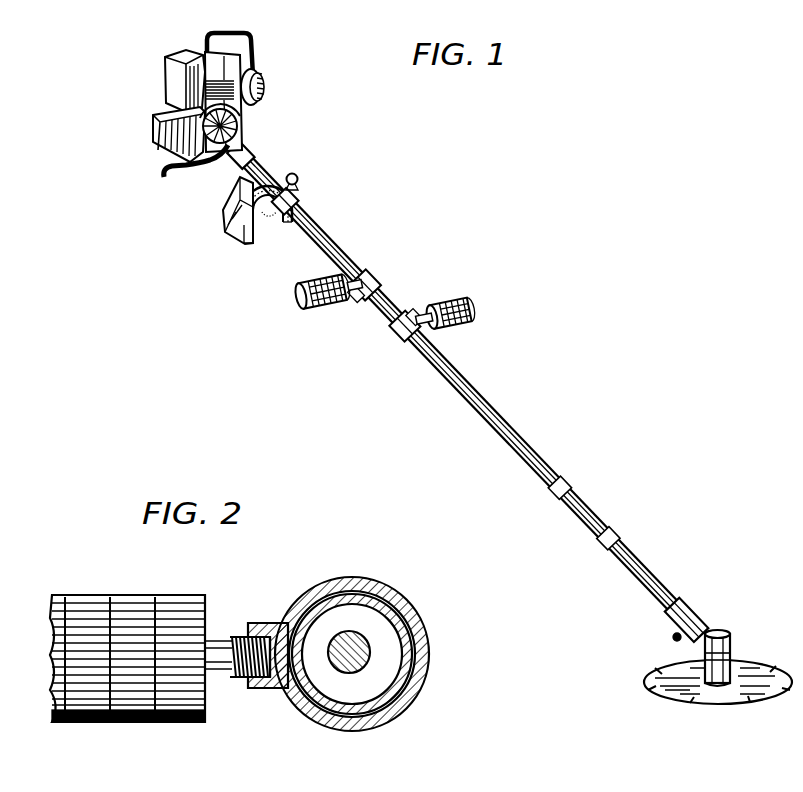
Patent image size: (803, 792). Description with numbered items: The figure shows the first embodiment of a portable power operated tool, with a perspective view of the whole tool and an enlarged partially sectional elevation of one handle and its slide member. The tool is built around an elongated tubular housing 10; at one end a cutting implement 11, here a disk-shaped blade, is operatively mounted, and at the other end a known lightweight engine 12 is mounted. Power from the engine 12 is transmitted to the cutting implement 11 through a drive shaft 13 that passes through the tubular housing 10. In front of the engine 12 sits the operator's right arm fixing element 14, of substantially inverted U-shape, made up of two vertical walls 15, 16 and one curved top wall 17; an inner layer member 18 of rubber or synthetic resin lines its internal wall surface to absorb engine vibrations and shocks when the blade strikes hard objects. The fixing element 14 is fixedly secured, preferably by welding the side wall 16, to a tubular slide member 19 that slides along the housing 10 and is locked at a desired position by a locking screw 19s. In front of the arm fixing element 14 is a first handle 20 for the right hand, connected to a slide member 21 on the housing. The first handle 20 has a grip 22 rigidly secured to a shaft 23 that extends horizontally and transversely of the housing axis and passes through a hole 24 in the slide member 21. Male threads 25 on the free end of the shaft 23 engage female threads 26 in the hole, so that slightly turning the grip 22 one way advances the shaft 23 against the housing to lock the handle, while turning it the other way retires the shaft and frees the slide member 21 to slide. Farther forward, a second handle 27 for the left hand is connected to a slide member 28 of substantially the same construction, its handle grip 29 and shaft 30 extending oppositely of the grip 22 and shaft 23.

In FIG. 1, the elongated tubular housing 10 is at (505, 406).
In FIG. 2, the elongated tubular housing 10 is at (370, 606).
In FIG. 1, the cutting implement 11 is at (706, 700).
In FIG. 1, the engine 12 is at (160, 118).
In FIG. 1, the drive shaft 13 is at (600, 525).
In FIG. 2, the drive shaft 13 is at (358, 674).
In FIG. 1, the arm fixing element 14 is at (228, 226).
In FIG. 1, the vertical wall 15 is at (233, 242).
In FIG. 1, the vertical wall 16 is at (286, 216).
In FIG. 1, the curved top wall 17 is at (236, 190).
In FIG. 1, the inner layer member 18 is at (262, 224).
In FIG. 1, the tubular slide member 19 is at (306, 202).
In FIG. 1, the locking screw 19s is at (298, 178).
In FIG. 1, the first handle 20 is at (298, 296).
In FIG. 1, the slide member 21 is at (372, 276).
In FIG. 2, the slide member 21 is at (424, 614).
In FIG. 1, the grip 22 is at (325, 300).
In FIG. 2, the grip 22 is at (120, 726).
In FIG. 1, the shaft 23 is at (354, 292).
In FIG. 2, the shaft 23 is at (226, 636).
In FIG. 2, the hole 24 is at (262, 632).
In FIG. 2, the male threads 25 is at (237, 684).
In FIG. 2, the female threads 26 is at (270, 686).
In FIG. 1, the second handle 27 is at (466, 322).
In FIG. 1, the slide member 28 is at (402, 334).
In FIG. 1, the handle grip 29 is at (462, 312).
In FIG. 1, the shaft 30 is at (414, 320).